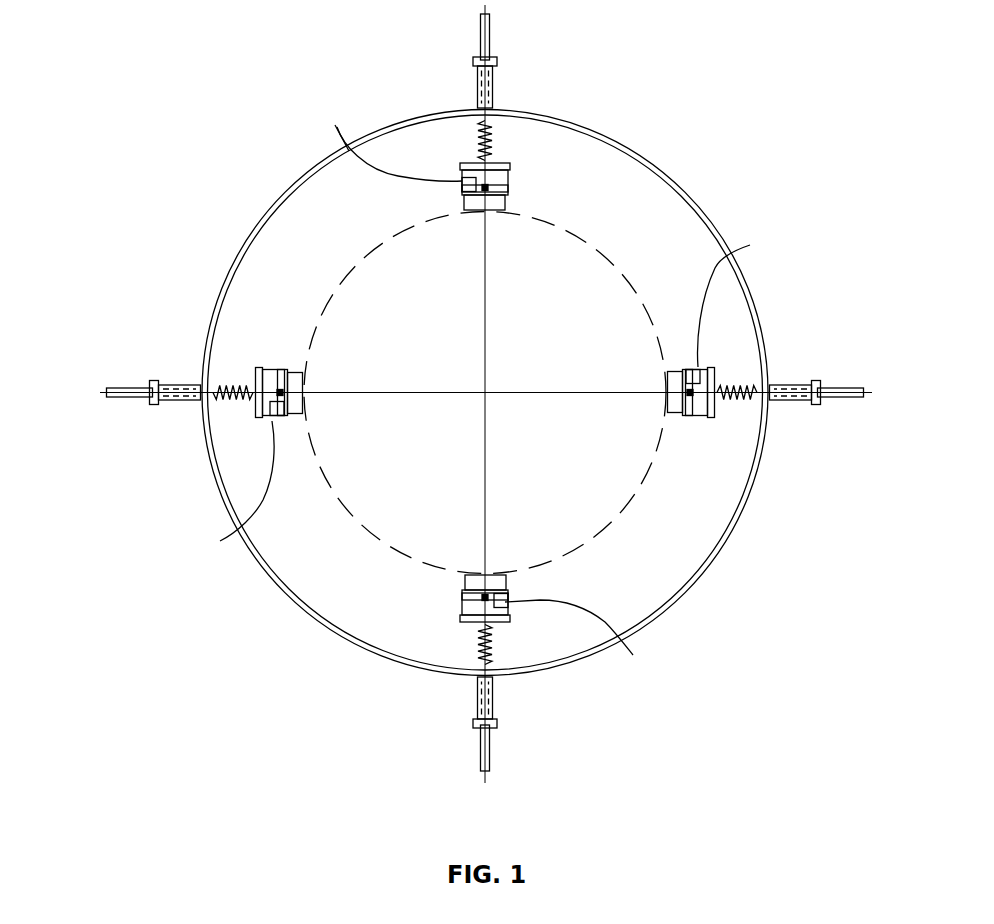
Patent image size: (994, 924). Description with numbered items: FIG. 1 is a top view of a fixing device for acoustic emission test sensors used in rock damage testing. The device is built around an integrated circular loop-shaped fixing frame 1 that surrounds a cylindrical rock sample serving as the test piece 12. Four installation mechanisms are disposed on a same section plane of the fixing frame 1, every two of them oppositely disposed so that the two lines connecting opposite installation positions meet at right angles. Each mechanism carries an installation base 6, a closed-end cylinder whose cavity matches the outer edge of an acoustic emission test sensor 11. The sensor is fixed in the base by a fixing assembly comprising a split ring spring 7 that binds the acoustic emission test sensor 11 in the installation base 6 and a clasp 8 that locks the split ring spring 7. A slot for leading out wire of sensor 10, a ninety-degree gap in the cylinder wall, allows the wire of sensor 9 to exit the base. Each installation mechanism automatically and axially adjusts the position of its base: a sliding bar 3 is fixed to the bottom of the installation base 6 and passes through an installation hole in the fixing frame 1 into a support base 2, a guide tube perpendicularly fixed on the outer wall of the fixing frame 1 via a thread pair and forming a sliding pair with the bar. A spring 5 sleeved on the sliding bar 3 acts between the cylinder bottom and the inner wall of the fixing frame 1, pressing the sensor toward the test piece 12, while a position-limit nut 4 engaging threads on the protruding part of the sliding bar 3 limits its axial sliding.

The fixing frame 1 is at (211, 327).
The support base 2 is at (192, 387).
The sliding bar 3 is at (127, 390).
The position-limit nut 4 is at (153, 385).
The spring 5 is at (218, 387).
The installation base 6 is at (508, 175).
The split ring spring 7 is at (502, 189).
The clasp 8 is at (492, 193).
The wire of sensor 9 is at (397, 175).
The slot for leading out wire of sensor 10 is at (347, 150).
The acoustic emission test sensor 11 is at (465, 205).
The test piece 12 is at (427, 297).